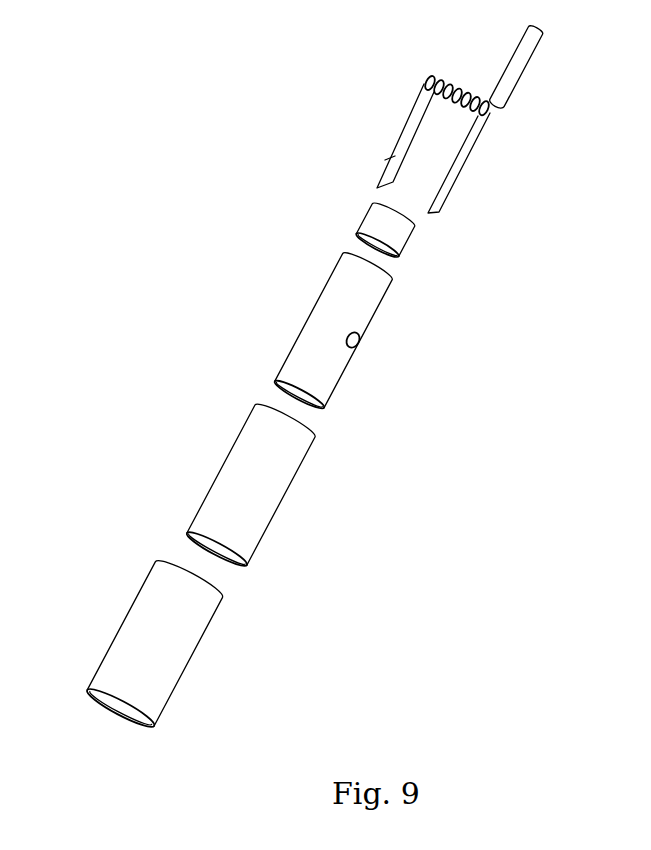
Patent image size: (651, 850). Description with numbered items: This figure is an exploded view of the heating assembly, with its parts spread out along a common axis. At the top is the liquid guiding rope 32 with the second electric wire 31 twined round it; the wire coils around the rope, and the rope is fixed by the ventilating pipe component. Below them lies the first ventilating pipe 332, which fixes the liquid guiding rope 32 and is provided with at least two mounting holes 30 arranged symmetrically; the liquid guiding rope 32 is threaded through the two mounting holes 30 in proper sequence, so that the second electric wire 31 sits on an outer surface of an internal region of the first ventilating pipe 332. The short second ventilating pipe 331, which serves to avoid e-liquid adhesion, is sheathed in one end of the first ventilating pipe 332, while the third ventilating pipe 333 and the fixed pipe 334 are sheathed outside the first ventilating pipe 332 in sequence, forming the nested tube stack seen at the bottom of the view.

The mounting hole 30 is at (360, 343).
The second electric wire 31 is at (500, 108).
The liquid guiding rope 32 is at (405, 133).
The second ventilating pipe 331 is at (403, 238).
The first ventilating pipe 332 is at (370, 300).
The third ventilating pipe 333 is at (247, 533).
The fixed pipe 334 is at (141, 598).